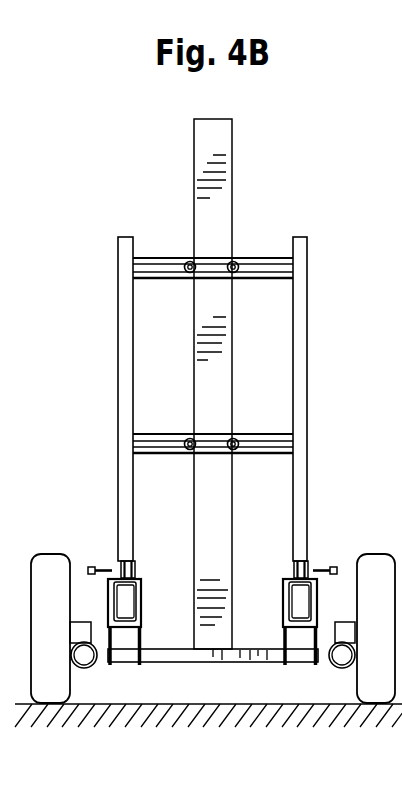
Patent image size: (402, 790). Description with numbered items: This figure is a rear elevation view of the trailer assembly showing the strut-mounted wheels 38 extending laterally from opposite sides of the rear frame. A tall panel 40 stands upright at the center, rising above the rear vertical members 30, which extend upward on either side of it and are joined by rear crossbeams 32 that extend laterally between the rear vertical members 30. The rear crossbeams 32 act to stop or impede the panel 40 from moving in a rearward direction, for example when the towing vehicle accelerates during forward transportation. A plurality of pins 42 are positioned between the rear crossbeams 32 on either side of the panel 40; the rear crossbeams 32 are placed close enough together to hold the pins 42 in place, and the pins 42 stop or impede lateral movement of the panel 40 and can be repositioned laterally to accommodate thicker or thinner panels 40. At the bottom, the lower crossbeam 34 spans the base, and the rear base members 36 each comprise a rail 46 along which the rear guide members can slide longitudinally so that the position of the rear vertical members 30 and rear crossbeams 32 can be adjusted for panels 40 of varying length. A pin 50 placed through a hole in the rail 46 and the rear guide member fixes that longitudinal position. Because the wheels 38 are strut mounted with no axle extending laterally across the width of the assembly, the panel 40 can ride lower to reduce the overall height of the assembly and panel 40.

The rear vertical member 30 is at (118, 377).
The rear crossbeam 32 is at (345, 246).
The lower crossbeam 34 is at (177, 660).
The rear base member 36 is at (138, 578).
The wheel 38 is at (49, 565).
The panel 40 is at (194, 150).
The pin 42 is at (185, 263).
The rail 46 is at (134, 577).
The pin 50 is at (100, 563).